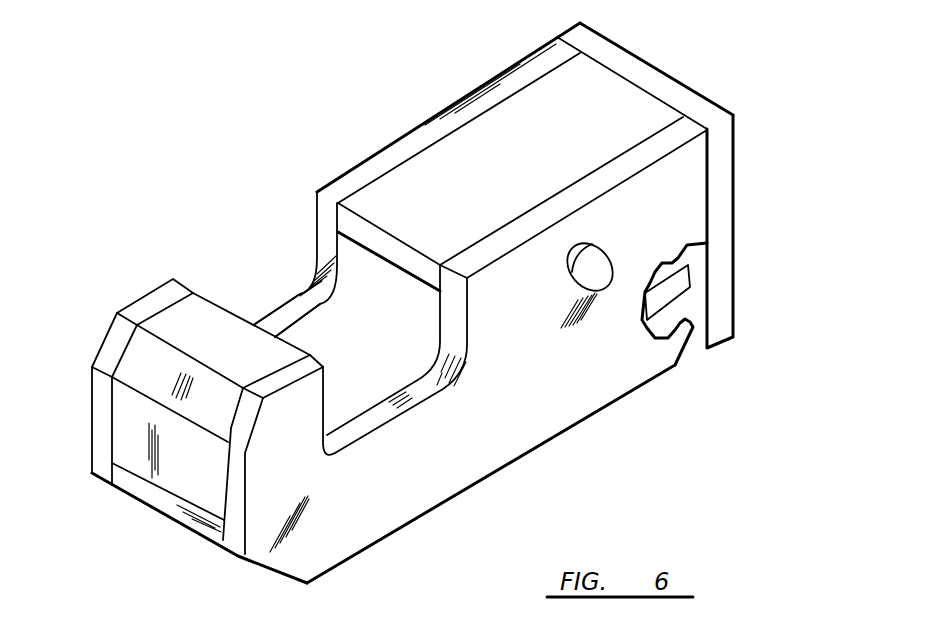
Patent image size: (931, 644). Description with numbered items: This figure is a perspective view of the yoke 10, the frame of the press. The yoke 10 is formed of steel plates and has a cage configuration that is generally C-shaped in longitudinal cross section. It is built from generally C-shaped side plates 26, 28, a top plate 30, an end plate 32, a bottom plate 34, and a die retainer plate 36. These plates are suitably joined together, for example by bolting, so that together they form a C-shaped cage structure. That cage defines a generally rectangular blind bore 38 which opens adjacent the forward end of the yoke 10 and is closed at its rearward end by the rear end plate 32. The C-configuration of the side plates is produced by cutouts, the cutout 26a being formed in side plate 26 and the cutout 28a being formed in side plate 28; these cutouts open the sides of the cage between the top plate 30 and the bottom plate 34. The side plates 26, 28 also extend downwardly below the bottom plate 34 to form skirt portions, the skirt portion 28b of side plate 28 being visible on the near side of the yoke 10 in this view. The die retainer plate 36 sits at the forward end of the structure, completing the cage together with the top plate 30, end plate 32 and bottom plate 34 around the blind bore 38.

The yoke 10 is at (400, 100).
The side plate 26 is at (372, 157).
The cutout 26a is at (300, 307).
The side plate 28 is at (506, 301).
The cutout 28a is at (390, 413).
The skirt portion 28b is at (578, 413).
The top plate 30 is at (474, 176).
The end plate 32 is at (672, 75).
The bottom plate 34 is at (375, 370).
The die retainer plate 36 is at (133, 433).
The blind bore 38 is at (356, 254).